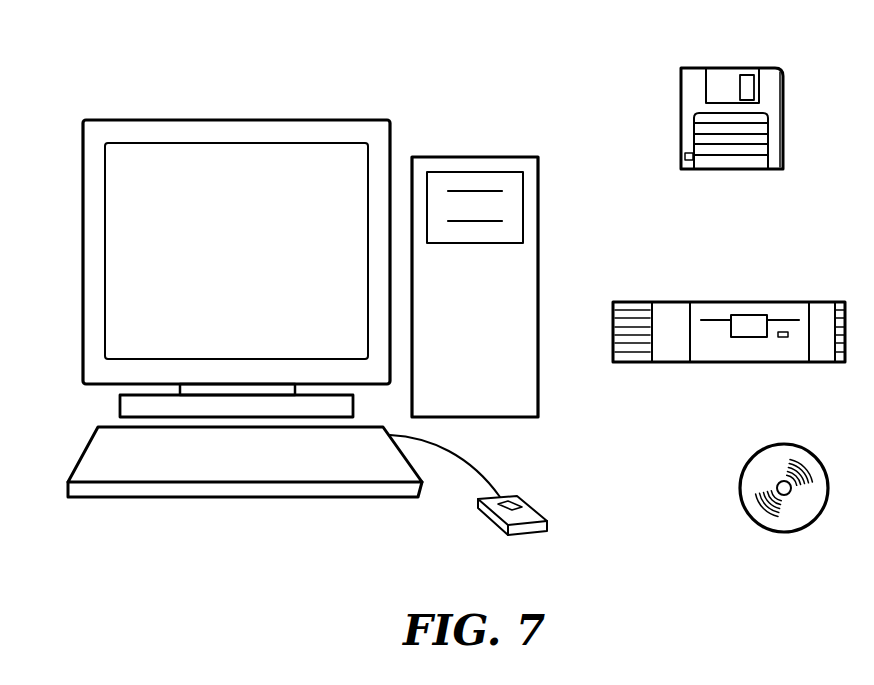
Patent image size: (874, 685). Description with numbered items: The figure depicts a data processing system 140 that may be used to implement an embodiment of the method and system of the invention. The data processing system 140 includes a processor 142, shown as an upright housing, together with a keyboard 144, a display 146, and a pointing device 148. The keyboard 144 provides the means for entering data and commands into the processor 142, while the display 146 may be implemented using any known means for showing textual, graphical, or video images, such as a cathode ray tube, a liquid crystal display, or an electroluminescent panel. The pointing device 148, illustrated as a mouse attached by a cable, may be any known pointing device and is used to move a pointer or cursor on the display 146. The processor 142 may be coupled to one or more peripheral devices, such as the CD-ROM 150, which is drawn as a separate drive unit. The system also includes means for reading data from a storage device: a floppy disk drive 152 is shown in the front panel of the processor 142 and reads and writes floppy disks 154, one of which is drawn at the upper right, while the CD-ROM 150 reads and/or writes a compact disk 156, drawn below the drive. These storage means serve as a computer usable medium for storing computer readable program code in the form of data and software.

The data processing system 140 is at (70, 108).
The processor 142 is at (455, 156).
The keyboard 144 is at (98, 427).
The display 146 is at (328, 120).
The pointing device 148 is at (527, 501).
The CD-ROM 150 is at (768, 302).
The floppy disk drive 152 is at (520, 171).
The floppy disk 154 is at (715, 68).
The compact disk 156 is at (770, 445).